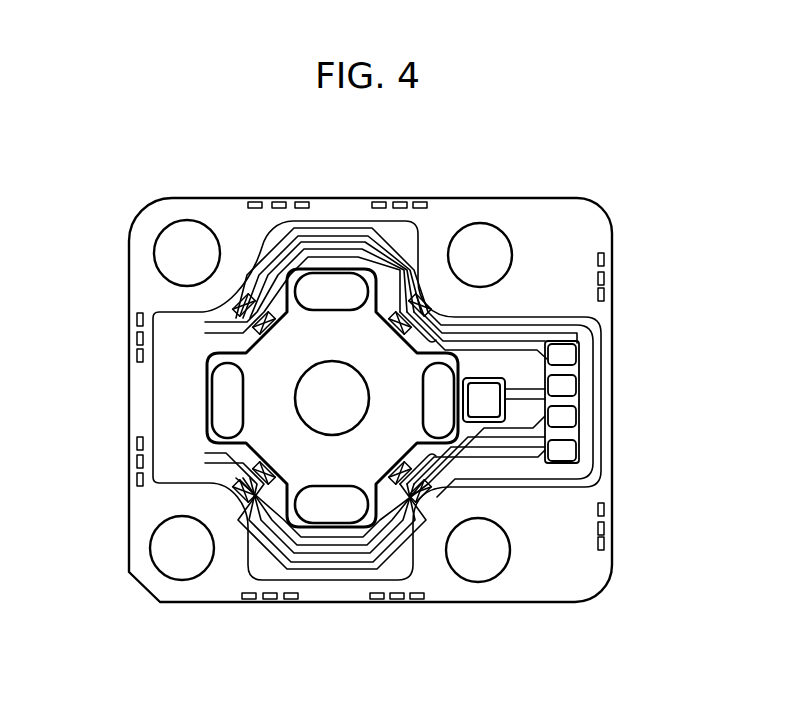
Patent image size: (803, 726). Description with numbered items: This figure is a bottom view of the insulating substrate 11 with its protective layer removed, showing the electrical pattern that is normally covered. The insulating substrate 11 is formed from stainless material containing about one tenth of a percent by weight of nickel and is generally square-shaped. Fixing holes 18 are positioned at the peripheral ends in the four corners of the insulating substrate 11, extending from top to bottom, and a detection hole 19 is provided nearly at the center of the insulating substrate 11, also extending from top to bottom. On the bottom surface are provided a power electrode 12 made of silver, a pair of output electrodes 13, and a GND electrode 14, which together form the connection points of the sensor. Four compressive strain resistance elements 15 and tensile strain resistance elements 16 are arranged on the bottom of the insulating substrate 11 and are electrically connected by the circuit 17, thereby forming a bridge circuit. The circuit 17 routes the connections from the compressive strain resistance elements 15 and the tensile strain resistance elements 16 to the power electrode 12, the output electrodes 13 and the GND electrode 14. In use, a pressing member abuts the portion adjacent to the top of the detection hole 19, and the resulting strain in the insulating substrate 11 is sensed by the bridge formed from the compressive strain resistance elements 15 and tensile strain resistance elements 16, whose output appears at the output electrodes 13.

The insulating substrate 11 is at (567, 232).
The power electrode 12 is at (573, 450).
The output electrodes 13 is at (571, 352).
The GND electrode 14 is at (567, 390).
The compressive strain resistance elements 15 is at (264, 321).
The tensile strain resistance elements 16 is at (244, 303).
The circuit 17 is at (477, 466).
The fixing holes 18 is at (173, 237).
The detection hole 19 is at (318, 396).